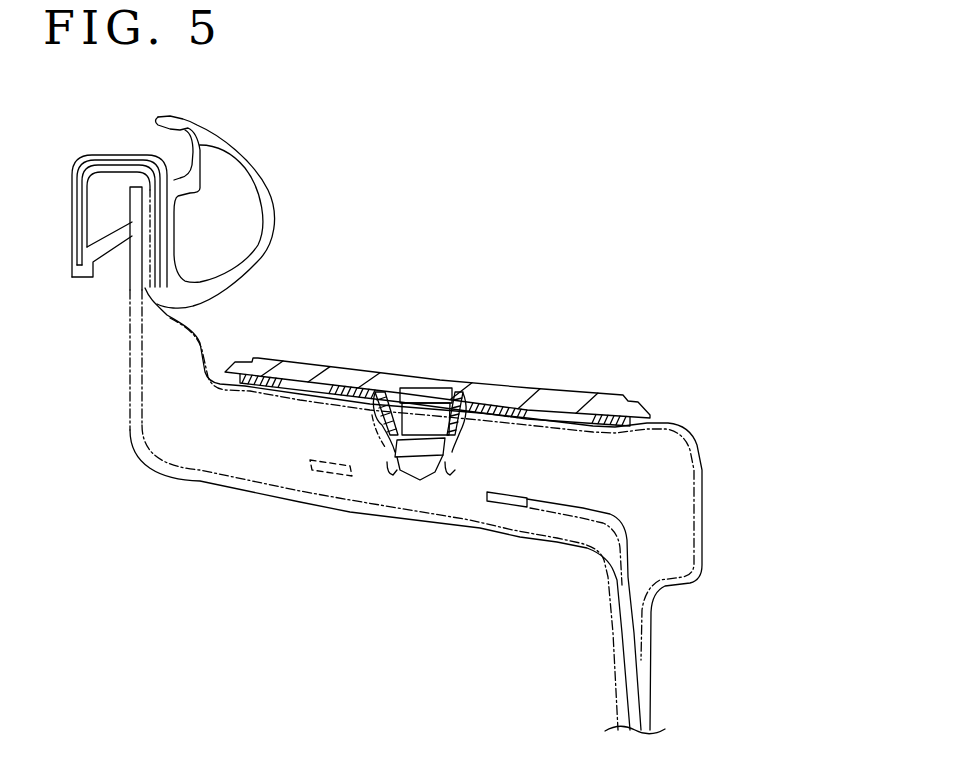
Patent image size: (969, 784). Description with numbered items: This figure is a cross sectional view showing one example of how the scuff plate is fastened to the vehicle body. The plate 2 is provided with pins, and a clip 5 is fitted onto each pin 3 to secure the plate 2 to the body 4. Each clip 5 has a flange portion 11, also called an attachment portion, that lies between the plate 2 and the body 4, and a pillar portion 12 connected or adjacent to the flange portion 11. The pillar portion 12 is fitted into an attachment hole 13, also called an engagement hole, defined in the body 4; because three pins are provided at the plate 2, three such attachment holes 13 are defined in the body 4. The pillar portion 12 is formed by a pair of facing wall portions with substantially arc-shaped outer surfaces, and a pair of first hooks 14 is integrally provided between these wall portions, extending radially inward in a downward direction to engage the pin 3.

The plate 2 is at (499, 388).
The pin 3 is at (424, 492).
The body 4 is at (675, 415).
The clip 5 is at (380, 458).
The flange portion 11 is at (517, 418).
The pillar portion 12 is at (455, 433).
The attachment hole 13 is at (372, 407).
The first hooks 14 is at (460, 432).